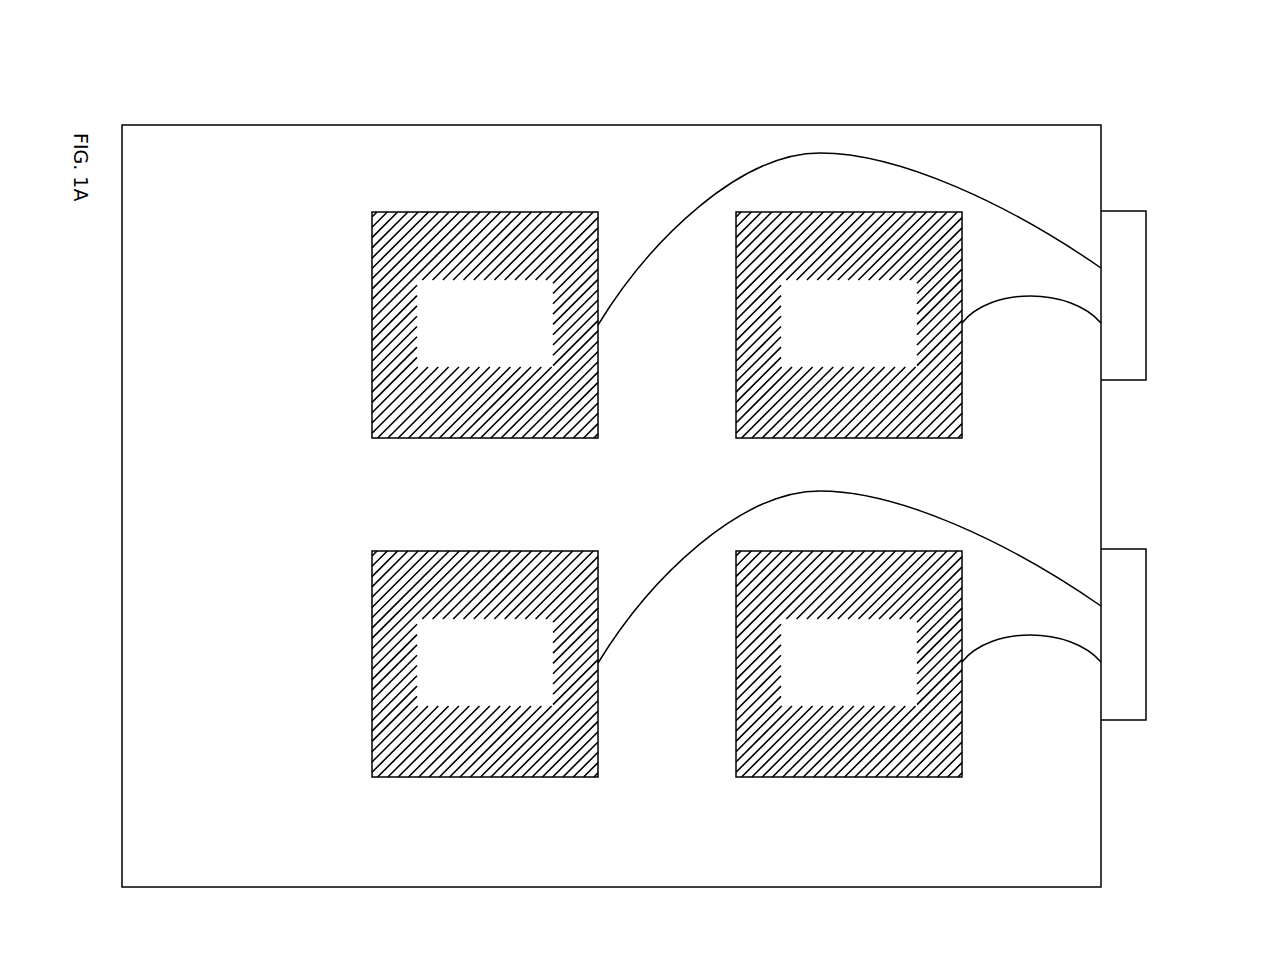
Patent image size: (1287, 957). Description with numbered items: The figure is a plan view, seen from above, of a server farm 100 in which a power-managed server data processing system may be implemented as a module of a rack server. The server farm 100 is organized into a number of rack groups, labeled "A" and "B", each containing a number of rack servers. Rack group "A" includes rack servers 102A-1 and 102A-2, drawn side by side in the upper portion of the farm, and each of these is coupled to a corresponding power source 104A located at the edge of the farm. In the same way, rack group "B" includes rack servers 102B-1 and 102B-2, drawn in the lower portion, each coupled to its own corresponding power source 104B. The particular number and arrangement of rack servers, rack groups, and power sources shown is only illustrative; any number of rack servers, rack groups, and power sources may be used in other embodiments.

The server farm 100 is at (1156, 126).
The rack server 102A-1 is at (485, 325).
The rack server 102A-2 is at (849, 325).
The rack server 102B-1 is at (485, 664).
The rack server 102B-2 is at (849, 664).
The power source 104A is at (1146, 295).
The power source 104B is at (1146, 633).